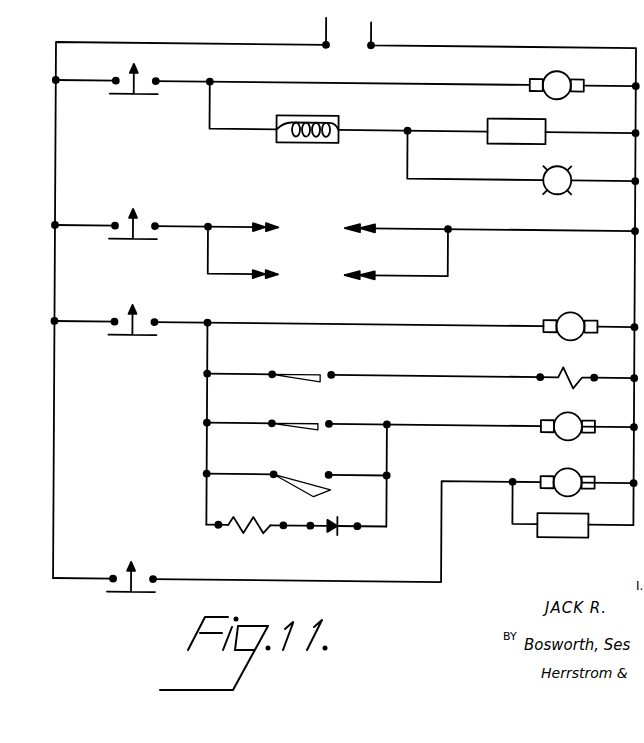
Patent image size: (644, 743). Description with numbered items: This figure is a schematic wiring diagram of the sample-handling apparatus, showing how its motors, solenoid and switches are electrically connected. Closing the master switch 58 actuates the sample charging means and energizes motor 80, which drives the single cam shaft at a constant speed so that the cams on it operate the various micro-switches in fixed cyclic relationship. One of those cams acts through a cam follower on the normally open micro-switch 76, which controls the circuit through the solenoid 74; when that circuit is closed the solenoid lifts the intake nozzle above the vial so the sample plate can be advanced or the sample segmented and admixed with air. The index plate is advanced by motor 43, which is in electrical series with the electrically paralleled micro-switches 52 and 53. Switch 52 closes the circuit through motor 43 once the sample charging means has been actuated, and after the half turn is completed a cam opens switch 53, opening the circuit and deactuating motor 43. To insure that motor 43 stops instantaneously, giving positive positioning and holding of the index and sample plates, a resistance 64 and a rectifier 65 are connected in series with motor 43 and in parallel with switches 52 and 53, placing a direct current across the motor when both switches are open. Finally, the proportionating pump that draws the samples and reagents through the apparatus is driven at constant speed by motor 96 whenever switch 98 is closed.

The master switch 58 is at (150, 315).
The motor 80 is at (552, 307).
The micro-switch 76 is at (345, 369).
The solenoid 74 is at (560, 360).
The micro-switch 52 is at (349, 416).
The motor 43 is at (560, 406).
The micro-switch 53 is at (334, 462).
The resistance 64 is at (259, 515).
The rectifier 65 is at (335, 514).
The motor 96 is at (559, 465).
The switch 98 is at (120, 571).